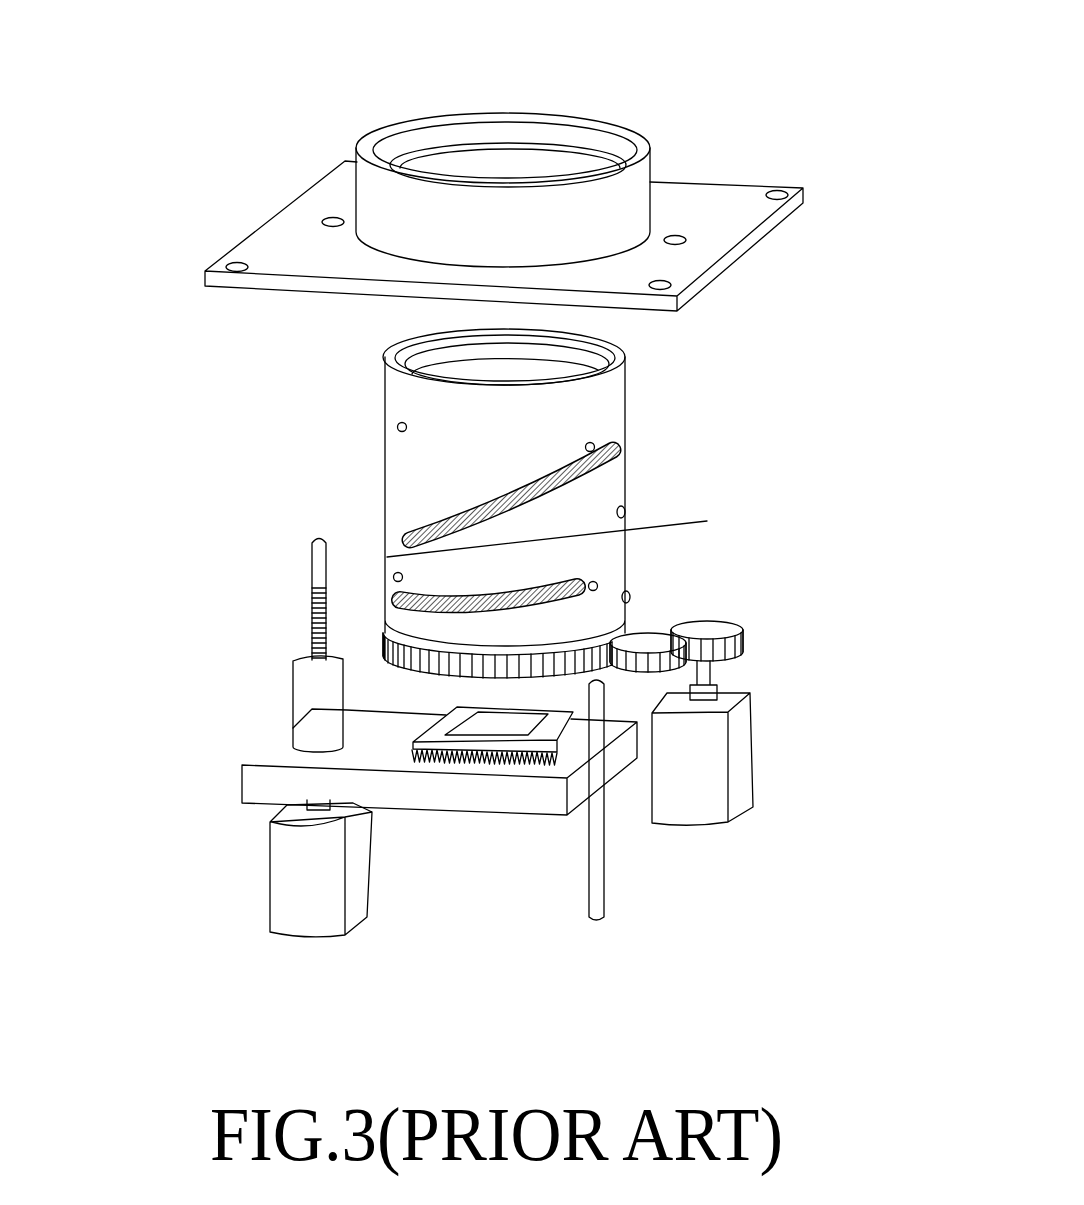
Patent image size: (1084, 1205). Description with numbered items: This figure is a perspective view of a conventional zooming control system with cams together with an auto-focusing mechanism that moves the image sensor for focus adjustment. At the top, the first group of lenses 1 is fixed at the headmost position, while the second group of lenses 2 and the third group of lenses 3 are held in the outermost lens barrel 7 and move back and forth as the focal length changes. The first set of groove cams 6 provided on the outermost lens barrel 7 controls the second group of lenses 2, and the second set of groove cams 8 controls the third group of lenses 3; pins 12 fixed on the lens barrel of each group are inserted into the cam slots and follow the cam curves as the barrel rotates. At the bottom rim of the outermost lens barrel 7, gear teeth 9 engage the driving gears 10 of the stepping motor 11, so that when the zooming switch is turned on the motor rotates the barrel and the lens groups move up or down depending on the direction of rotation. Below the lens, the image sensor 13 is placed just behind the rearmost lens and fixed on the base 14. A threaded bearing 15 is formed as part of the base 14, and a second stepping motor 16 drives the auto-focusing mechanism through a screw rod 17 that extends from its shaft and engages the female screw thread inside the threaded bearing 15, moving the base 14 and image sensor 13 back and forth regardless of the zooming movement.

The first group of lenses 1 is at (565, 160).
The second group of lenses 2 is at (540, 373).
The third group of lenses 3 is at (540, 373).
The first set of groove cams 6 is at (617, 512).
The outermost lens barrel 7 is at (613, 480).
The second set of groove cams 8 is at (630, 578).
The gear teeth 9 is at (513, 667).
The driving gears 10 is at (717, 672).
The stepping motor 11 is at (747, 777).
The pins 12 is at (590, 447).
The image sensor 13 is at (507, 732).
The base 14 is at (527, 803).
The threaded bearing 15 is at (300, 690).
The stepping motor 16 is at (292, 856).
The screw rod 17 is at (313, 570).